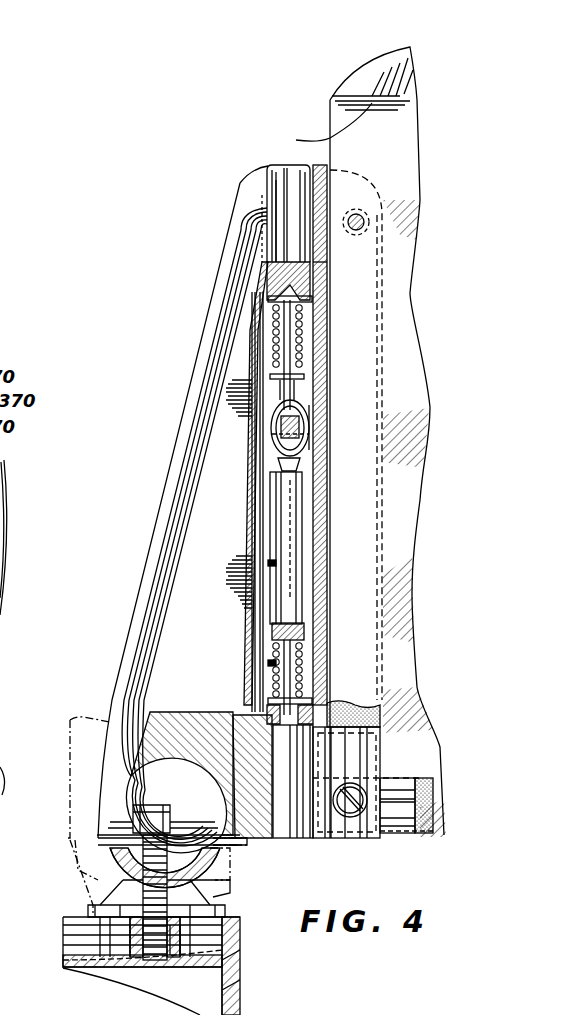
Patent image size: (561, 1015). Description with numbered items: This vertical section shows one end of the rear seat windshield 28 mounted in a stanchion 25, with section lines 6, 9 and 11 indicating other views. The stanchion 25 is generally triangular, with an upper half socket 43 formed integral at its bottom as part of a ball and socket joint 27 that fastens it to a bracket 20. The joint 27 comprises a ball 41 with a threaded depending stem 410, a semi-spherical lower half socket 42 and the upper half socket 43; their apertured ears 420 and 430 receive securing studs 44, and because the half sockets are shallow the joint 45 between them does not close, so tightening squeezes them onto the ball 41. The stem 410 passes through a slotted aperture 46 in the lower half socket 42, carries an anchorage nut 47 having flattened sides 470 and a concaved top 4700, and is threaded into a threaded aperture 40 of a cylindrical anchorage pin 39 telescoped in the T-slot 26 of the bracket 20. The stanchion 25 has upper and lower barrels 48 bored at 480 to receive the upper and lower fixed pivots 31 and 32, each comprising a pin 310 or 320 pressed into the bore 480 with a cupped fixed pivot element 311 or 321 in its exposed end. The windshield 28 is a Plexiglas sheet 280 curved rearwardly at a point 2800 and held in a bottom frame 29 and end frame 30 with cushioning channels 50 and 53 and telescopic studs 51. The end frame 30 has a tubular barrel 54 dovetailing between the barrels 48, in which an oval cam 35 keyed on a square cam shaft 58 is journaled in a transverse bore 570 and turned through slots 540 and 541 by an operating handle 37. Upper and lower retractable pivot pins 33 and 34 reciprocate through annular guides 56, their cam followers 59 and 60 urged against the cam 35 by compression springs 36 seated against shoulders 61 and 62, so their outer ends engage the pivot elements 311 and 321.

The section line 6- 6 is at (384, 22).
The section line 9- 9 is at (168, 268).
The section line 11- 11 is at (428, 749).
The bracket 20 is at (236, 978).
The stanchion 25 is at (183, 410).
The T-slot 26 is at (80, 948).
The ball and socket joint 27 is at (160, 780).
The windshield 28 is at (328, 108).
The bottom frame 29 is at (400, 830).
The end frame 30 is at (350, 172).
The upper fixed pivot 31 is at (318, 285).
The lower fixed pivot 32 is at (333, 707).
The upper retractable pivot pin 33 is at (298, 340).
The lower retractable pivot pin 34 is at (300, 562).
The oval cam 35 is at (257, 452).
The compression spring 36 is at (300, 330).
The operating handle 37 is at (265, 545).
The cylindrical anchorage pin 39 is at (150, 953).
The threaded aperture 40 is at (163, 960).
The ball 41 is at (217, 887).
The lower half socket 42 is at (230, 847).
The upper half socket 43 is at (117, 790).
The securing stud 44 is at (152, 810).
The joint 45 is at (80, 873).
The slotted aperture 46 is at (123, 887).
The anchorage nut 47 is at (100, 923).
The barrel 48 is at (283, 197).
The cushioning channel 50 is at (424, 833).
The telescopic stud 51 is at (349, 812).
The cushioning channel 53 is at (333, 537).
The tubular barrel 54 is at (265, 520).
The annular guide 56 is at (312, 310).
The square cam shaft 58 is at (305, 410).
The cam follower 59 is at (300, 378).
The cam follower 60 is at (300, 468).
The shoulder 61 is at (267, 385).
The shoulder 62 is at (297, 640).
The Plexiglas sheet 280 is at (398, 120).
The curved point 2800 is at (319, 123).
The pin 310 is at (278, 233).
The cupped fixed pivot element 311 is at (320, 268).
The pin 320 is at (297, 838).
The cupped fixed pivot element 321 is at (250, 705).
The threaded stem 410 is at (160, 933).
The apertured ear 420 is at (66, 832).
The apertured ear 430 is at (140, 827).
The flattened side 470 is at (117, 900).
The bore 480 is at (262, 212).
The slot 540 is at (318, 428).
The slot 541 is at (262, 408).
The transverse bore 570 is at (302, 436).
The concaved top 4700 is at (213, 897).